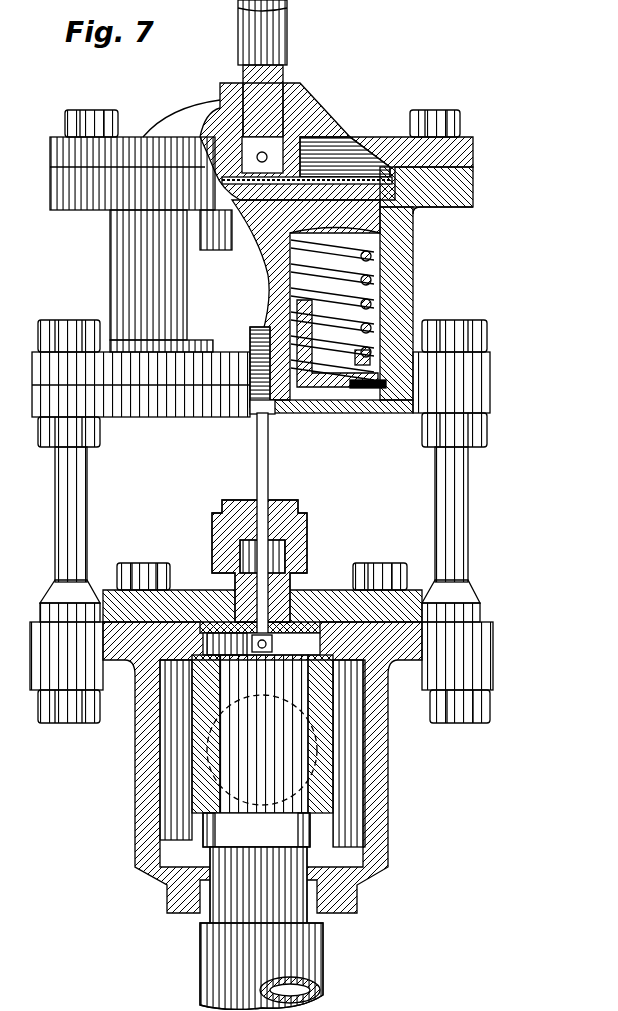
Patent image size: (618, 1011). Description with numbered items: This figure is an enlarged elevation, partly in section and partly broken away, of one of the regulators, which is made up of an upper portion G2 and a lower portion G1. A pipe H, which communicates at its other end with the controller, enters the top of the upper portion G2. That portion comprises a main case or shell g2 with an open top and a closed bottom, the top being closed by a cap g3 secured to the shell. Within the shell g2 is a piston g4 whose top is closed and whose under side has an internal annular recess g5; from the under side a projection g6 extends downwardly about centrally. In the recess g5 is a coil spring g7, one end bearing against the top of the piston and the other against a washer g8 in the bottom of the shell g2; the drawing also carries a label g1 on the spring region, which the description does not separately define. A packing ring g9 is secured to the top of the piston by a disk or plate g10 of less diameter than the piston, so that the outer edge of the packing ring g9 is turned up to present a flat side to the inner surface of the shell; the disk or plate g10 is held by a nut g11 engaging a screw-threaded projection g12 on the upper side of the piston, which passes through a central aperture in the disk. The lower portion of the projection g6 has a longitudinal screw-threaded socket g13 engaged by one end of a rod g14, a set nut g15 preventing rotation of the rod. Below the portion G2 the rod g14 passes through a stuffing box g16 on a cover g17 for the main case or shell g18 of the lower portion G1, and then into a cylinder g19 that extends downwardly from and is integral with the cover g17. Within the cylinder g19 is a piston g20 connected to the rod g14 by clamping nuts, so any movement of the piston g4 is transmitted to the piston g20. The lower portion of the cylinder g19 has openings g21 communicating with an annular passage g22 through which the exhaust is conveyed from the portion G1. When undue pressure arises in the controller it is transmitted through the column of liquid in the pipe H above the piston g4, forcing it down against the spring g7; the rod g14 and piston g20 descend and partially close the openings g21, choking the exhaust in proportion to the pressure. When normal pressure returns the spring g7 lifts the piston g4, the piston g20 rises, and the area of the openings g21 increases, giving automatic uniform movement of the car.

The pipe H is at (271, 68).
The upper portion of the regulator G2 is at (261, 273).
The lower portion of the regulator G1 is at (261, 609).
The spring g1 is at (332, 310).
The main case or shell g2 is at (414, 256).
The cap g3 is at (322, 122).
The piston g4 is at (306, 300).
The annular recess g5 is at (376, 320).
The projection g6 is at (292, 413).
The coil spring g7 is at (370, 354).
The washer g8 is at (382, 390).
The packing ring g9 is at (393, 188).
The disk or plate g10 is at (307, 190).
The nut g11 is at (262, 155).
The screw-threaded projection g12 is at (345, 170).
The screw-threaded socket g13 is at (256, 342).
The rod g14 is at (268, 447).
The set nut g15 is at (255, 418).
The stuffing box g16 is at (305, 488).
The cover g17 is at (318, 578).
The main case or shell g18 is at (137, 735).
The cylinder g19 is at (274, 645).
The piston g20 is at (262, 723).
The openings g21 is at (256, 830).
The annular passage g22 is at (365, 802).